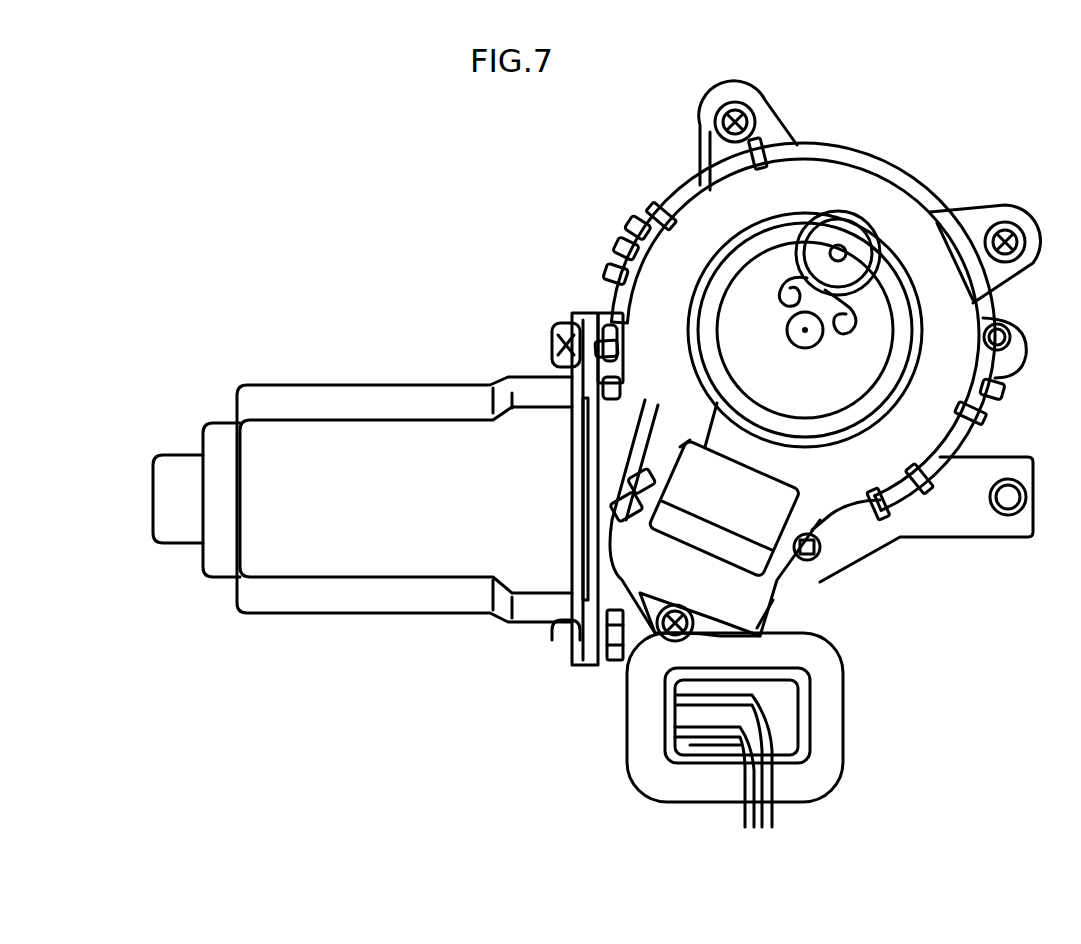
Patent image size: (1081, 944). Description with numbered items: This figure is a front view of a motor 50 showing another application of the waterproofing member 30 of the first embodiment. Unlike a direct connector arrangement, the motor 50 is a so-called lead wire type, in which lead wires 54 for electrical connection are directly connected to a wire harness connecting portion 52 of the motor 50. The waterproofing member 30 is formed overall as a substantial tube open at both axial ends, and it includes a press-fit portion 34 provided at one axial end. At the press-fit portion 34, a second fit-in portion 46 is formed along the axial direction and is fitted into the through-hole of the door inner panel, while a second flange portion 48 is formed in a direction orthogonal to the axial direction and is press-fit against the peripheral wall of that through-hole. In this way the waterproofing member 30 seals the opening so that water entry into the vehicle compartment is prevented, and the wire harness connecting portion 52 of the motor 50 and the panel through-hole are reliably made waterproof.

The motor 50 is at (567, 255).
The waterproofing member 30 is at (800, 705).
The press-fit portion 34 is at (774, 717).
The second fit-in portion 46 is at (805, 703).
The second flange portion 48 is at (838, 742).
The lead wires 54 is at (800, 753).
The wire harness connecting portion 52 is at (705, 745).